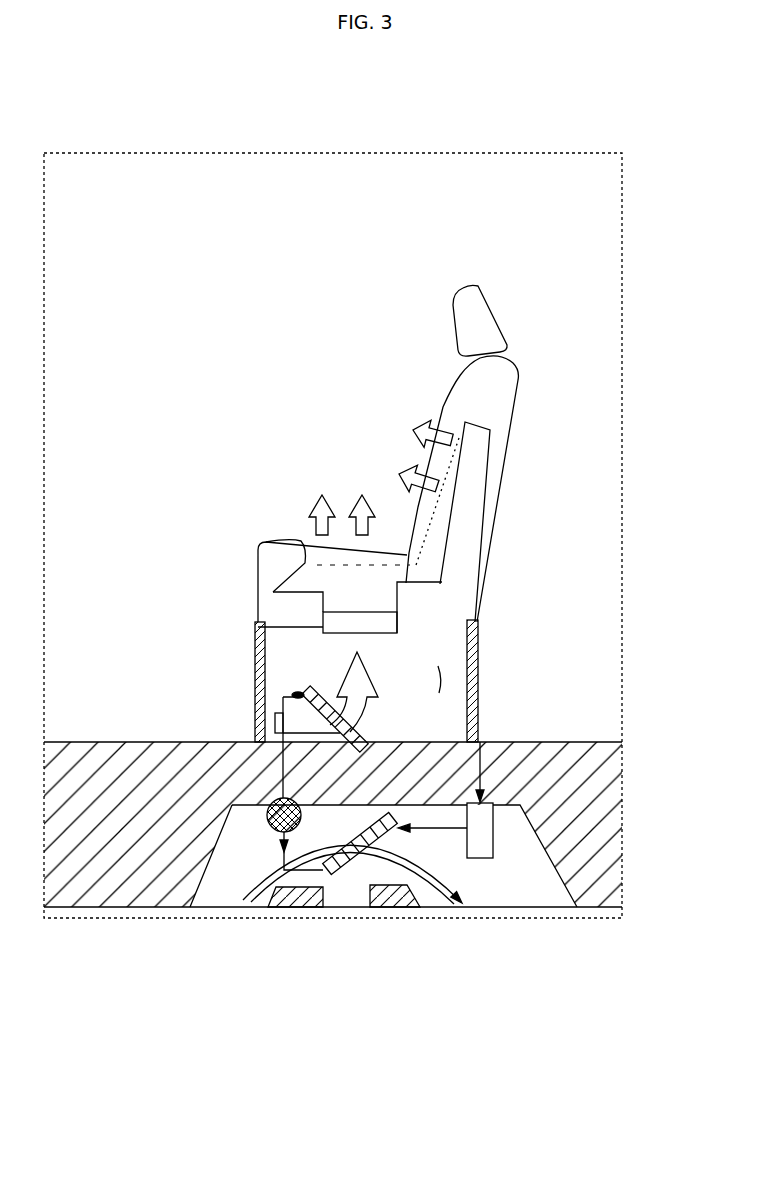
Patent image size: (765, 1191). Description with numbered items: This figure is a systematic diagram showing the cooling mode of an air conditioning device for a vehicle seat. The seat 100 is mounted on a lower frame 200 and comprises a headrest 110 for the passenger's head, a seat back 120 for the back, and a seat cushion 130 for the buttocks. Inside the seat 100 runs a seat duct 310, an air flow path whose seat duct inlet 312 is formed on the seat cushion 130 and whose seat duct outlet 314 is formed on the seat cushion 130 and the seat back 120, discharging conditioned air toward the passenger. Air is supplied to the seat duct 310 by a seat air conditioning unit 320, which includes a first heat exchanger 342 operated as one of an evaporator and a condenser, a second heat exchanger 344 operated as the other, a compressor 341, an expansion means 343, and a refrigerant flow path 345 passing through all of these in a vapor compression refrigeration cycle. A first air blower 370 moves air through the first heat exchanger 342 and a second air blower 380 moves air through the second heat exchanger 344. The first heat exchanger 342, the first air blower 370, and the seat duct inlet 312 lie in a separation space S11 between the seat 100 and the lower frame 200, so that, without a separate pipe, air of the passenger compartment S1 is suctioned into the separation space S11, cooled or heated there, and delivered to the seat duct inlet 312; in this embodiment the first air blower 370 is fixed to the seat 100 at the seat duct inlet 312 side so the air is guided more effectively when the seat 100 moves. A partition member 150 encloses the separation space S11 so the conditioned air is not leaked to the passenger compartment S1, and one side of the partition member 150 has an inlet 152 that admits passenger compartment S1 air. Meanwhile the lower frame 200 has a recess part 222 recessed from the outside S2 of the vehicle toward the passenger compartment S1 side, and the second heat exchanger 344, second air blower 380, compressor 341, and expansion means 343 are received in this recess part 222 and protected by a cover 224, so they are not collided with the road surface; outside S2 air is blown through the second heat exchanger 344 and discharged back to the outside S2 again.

The passenger compartment S1 is at (165, 207).
The seat 100 is at (490, 287).
The headrest 110 is at (490, 328).
The seat back 120 is at (548, 494).
The seat cushion 130 is at (258, 580).
The partition member 150 is at (255, 666).
The inlet 152 is at (258, 716).
The lower frame 200 is at (333, 876).
The recess part 222 is at (199, 875).
The cover 224 is at (283, 882).
The seat duct 310 is at (554, 508).
The seat duct inlet 312 is at (231, 619).
The seat duct outlet 314 is at (305, 552).
The seat air conditioning unit 320 is at (505, 863).
The compressor 341 is at (481, 858).
The first heat exchanger 342 is at (373, 726).
The expansion means 343 is at (279, 833).
The second heat exchanger 344 is at (360, 892).
The refrigerant flow path 345 is at (285, 890).
The first air blower 370 is at (497, 634).
The second air blower 380 is at (323, 872).
The outside of the vehicle S2 is at (78, 914).
The separation space S11 is at (440, 682).